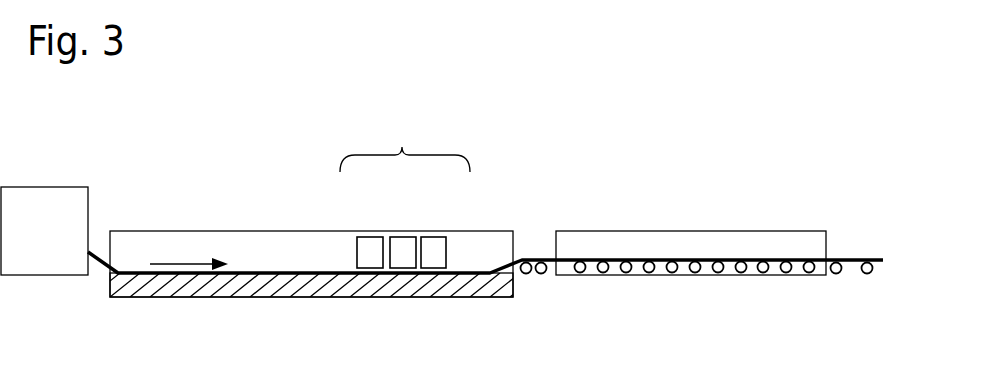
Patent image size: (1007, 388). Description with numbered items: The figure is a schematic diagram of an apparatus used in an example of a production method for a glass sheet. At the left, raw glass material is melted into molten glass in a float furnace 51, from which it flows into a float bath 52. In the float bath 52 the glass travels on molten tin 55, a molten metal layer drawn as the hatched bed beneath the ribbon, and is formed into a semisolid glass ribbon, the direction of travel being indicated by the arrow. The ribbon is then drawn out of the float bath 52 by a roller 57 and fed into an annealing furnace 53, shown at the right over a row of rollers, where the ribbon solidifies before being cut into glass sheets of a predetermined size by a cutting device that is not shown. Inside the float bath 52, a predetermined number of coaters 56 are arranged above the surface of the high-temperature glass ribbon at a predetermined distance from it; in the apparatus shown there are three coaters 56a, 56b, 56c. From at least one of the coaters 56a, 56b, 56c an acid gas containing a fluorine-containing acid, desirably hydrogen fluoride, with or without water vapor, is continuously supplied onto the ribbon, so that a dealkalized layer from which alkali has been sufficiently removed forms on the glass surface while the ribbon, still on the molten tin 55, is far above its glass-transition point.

The float furnace 51 is at (43, 250).
The float bath 52 is at (245, 253).
The annealing furnace 53 is at (720, 247).
The molten tin 55 is at (200, 286).
The coaters 56 is at (405, 149).
The coater 56a is at (375, 250).
The coater 56b is at (407, 250).
The coater 56c is at (435, 250).
The roller 57 is at (529, 275).